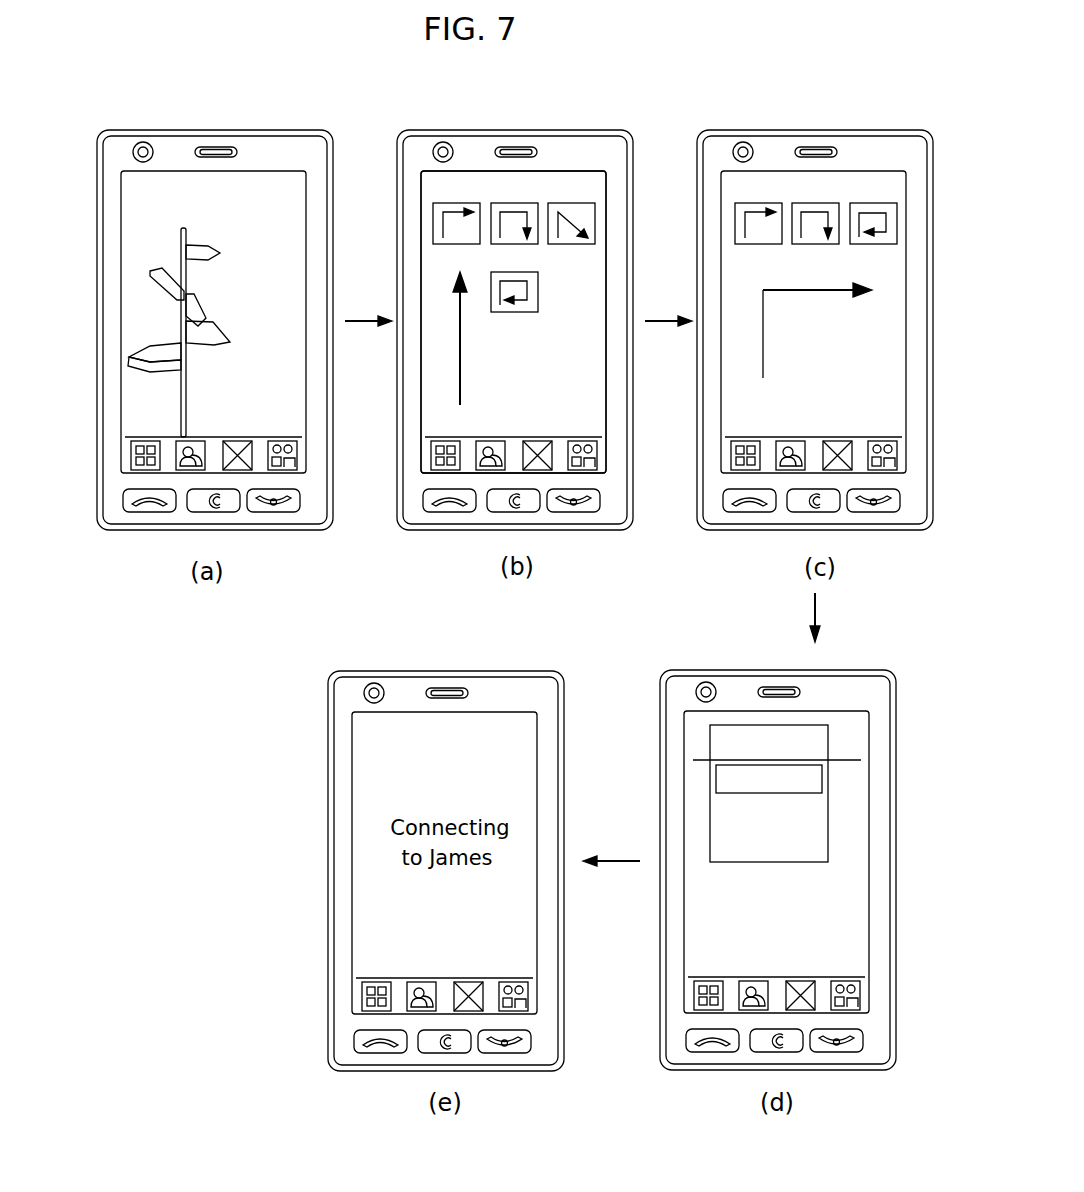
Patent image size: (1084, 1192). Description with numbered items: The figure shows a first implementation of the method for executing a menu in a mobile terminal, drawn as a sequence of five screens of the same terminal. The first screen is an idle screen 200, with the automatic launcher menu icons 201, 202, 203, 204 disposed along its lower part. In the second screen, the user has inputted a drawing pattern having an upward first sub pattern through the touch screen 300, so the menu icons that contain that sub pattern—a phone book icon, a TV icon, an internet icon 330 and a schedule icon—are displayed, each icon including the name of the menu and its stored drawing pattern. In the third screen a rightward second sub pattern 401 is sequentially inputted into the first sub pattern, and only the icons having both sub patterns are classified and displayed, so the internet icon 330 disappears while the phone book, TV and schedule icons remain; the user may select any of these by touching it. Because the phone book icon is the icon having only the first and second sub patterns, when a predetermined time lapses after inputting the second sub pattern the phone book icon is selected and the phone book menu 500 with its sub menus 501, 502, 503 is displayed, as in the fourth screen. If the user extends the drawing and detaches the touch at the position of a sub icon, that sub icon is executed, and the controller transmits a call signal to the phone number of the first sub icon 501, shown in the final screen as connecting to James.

The idle screen 200 is at (274, 182).
The automatic launcher menu icon 201 is at (143, 472).
The automatic launcher menu icon 202 is at (187, 472).
The automatic launcher menu icon 203 is at (243, 472).
The automatic launcher menu icon 204 is at (296, 472).
The touch screen 300 is at (588, 171).
The internet icon 330 is at (595, 222).
The second sub pattern 401 is at (825, 291).
The phone book menu 500 is at (818, 725).
The first sub icon 501 is at (812, 778).
The sub menu 502 is at (803, 813).
The sub menu 503 is at (803, 843).